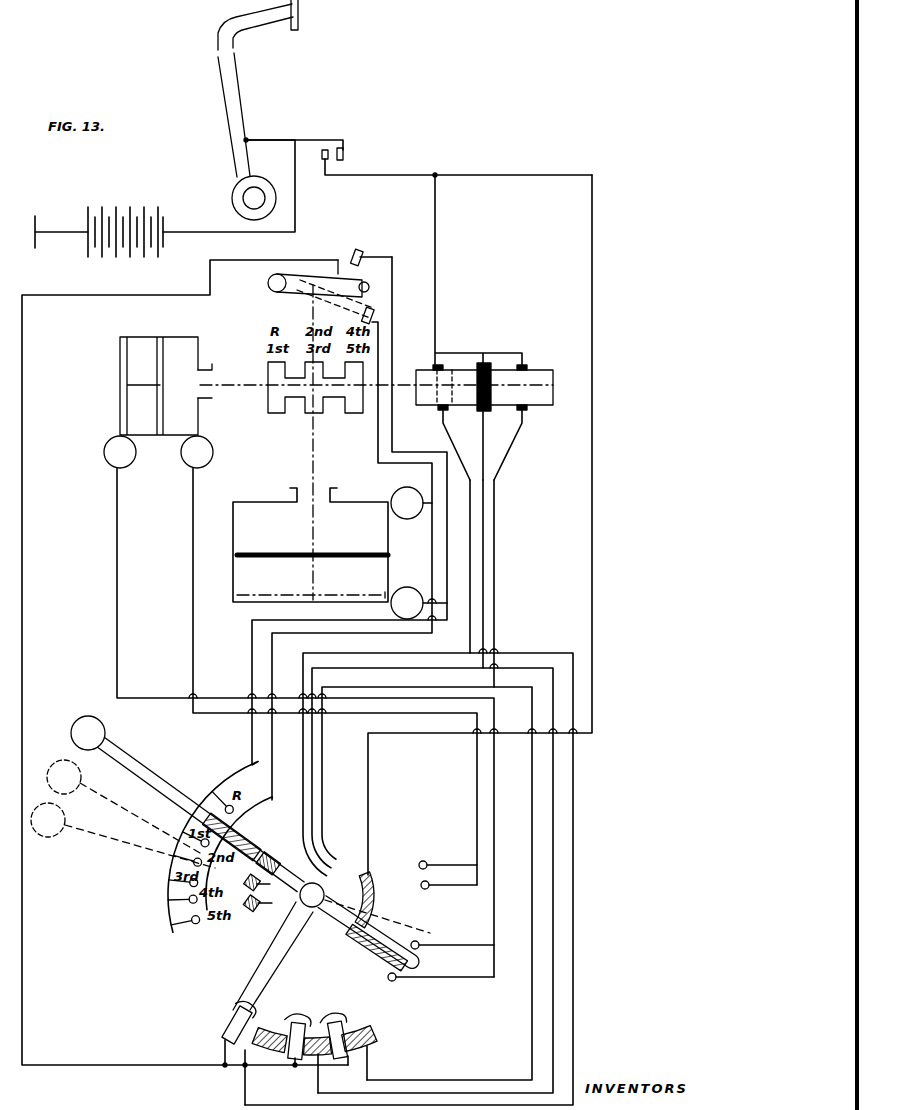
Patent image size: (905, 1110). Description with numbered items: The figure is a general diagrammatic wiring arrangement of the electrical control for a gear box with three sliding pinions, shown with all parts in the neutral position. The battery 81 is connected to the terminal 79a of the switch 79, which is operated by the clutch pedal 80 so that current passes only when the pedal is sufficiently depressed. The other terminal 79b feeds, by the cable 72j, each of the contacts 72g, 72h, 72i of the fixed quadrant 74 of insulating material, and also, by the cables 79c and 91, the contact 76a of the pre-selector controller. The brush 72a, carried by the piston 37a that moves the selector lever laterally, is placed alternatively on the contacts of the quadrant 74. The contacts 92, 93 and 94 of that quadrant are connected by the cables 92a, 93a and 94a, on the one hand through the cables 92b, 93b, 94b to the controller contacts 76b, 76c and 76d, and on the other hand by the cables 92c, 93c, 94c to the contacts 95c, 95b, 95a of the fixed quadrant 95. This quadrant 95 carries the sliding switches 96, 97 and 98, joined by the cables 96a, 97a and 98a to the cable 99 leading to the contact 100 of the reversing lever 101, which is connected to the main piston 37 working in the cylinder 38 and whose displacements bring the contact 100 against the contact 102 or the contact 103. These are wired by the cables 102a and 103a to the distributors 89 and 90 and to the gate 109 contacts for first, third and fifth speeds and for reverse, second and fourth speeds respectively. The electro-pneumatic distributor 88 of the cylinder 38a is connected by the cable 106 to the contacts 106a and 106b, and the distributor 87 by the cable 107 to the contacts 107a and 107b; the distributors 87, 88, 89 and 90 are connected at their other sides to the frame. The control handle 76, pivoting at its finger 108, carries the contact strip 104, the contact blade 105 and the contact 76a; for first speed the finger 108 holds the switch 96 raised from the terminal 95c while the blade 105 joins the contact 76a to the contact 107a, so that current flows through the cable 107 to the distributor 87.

The clutch pedal 80 is at (228, 91).
The battery 81 is at (116, 210).
The switch 79 is at (317, 140).
The terminal 79a is at (344, 152).
The terminal 79b is at (366, 165).
The cable 79c is at (435, 174).
The cable 91 is at (593, 408).
The cable 72j is at (437, 248).
The fixed quadrant 74 is at (553, 389).
The contact 72g is at (429, 378).
The contact 72h is at (481, 366).
The contact 72i is at (512, 361).
The brush 72a is at (491, 389).
The contact 92 is at (441, 412).
The contact 93 is at (483, 412).
The contact 94 is at (524, 412).
The cable 92a is at (470, 507).
The cable 93a is at (484, 507).
The cable 94a is at (495, 547).
The cable 92b is at (386, 756).
The cable 93b is at (397, 760).
The cable 94b is at (408, 765).
The cable 92c is at (574, 767).
The cable 93c is at (554, 865).
The cable 94c is at (531, 865).
The electro-pneumatic distributor 87 is at (120, 452).
The electro-pneumatic distributor 88 is at (197, 452).
The distributor 90 is at (411, 503).
The distributor 89 is at (419, 603).
The cable 107 is at (116, 549).
The cable 106 is at (192, 585).
The contact 106a is at (448, 856).
The contact 106b is at (428, 888).
The contact 107a is at (419, 943).
The contact 107b is at (395, 980).
The cylinder 38a is at (138, 345).
The piston 37a is at (197, 372).
The shift gate 109 is at (268, 403).
The shift rail 38 is at (232, 585).
The piston 37 is at (262, 545).
The reversing lever 101 is at (308, 272).
The contact 100 is at (377, 277).
The contact 102 is at (362, 252).
The contact 103 is at (381, 304).
The cable 103a is at (378, 447).
The cable 102a is at (392, 440).
The control handle 76 is at (180, 795).
The contact strip 104 is at (255, 838).
The contact 76b is at (272, 855).
The contact 76c is at (247, 884).
The contact 76d is at (250, 905).
The finger 108 is at (290, 938).
The contact blade 105 is at (372, 952).
The contact 76a is at (372, 884).
The sliding switch 96 is at (233, 985).
The sliding switch 97 is at (296, 1020).
The sliding switch 98 is at (338, 1018).
The fixed quadrant 95 is at (370, 1032).
The contact 95a is at (372, 1045).
The contact 95b is at (315, 1066).
The contact 95c is at (265, 1066).
The cable 96a is at (224, 1043).
The cable 97a is at (294, 1064).
The cable 98a is at (348, 1066).
The cable 99 is at (74, 1064).